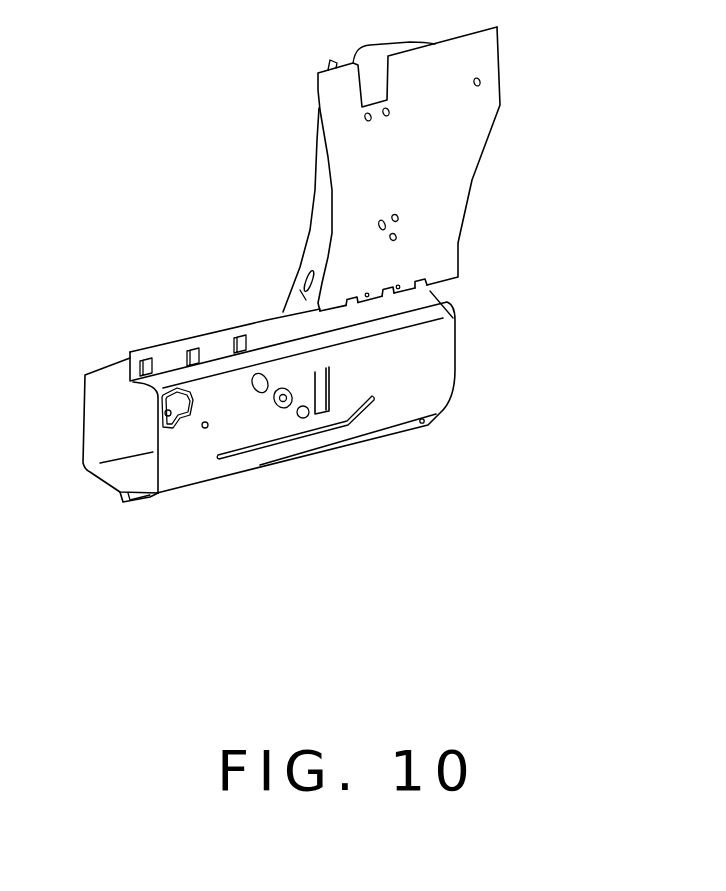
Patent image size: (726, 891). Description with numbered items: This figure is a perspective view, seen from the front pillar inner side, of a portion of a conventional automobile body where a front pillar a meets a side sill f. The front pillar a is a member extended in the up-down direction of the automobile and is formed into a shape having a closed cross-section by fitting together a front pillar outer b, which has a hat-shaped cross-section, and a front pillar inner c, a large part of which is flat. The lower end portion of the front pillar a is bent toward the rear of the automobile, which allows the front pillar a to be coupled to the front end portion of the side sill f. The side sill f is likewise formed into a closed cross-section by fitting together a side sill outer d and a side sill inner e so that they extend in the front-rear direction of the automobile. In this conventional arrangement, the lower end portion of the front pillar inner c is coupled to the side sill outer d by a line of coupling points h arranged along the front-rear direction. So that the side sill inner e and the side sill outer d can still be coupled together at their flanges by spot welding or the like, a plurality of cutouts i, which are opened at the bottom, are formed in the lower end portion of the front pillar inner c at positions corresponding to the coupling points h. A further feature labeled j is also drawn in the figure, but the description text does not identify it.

The front pillar a is at (524, 119).
The front pillar outer b is at (313, 180).
The front pillar inner c is at (465, 183).
The side sill outer d is at (83, 433).
The side sill inner e is at (177, 478).
The side sill f is at (359, 467).
The coupling points h is at (367, 292).
The cutouts i is at (354, 306).
The slot j is at (333, 306).